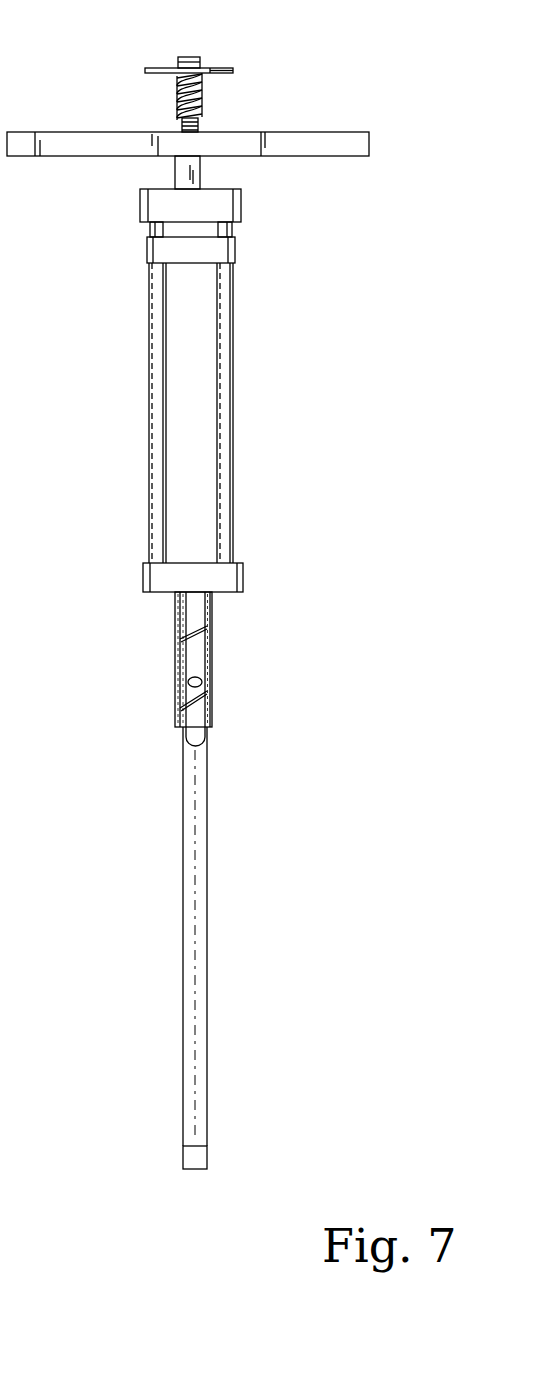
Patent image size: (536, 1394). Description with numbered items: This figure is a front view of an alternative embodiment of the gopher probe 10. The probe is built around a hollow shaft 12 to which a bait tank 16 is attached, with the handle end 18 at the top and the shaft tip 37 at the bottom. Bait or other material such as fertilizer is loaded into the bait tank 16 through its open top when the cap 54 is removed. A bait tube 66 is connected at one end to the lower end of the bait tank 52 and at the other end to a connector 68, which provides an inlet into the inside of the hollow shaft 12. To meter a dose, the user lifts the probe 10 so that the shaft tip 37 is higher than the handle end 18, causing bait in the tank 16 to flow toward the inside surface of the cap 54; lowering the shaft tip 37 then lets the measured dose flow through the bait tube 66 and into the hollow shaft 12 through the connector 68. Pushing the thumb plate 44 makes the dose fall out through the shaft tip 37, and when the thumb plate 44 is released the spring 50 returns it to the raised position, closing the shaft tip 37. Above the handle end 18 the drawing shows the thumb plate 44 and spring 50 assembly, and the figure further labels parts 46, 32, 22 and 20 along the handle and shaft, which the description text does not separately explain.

The gopher probe 10 is at (318, 76).
The hollow shaft 12 is at (226, 871).
The bait tank 16 is at (210, 362).
The handle end 18 is at (175, 168).
The plunger tip 20 is at (183, 1157).
The shaft sides 22 is at (183, 1012).
The handle bar 32 is at (369, 140).
The shaft tip 37 is at (226, 1164).
The thumb plate 44 is at (246, 74).
The plate 46 is at (148, 68).
The spring 50 is at (203, 99).
The lower end of the bait tank 52 is at (143, 580).
The cap 54 is at (140, 207).
The bait tube 66 is at (212, 643).
The connector 68 is at (203, 739).